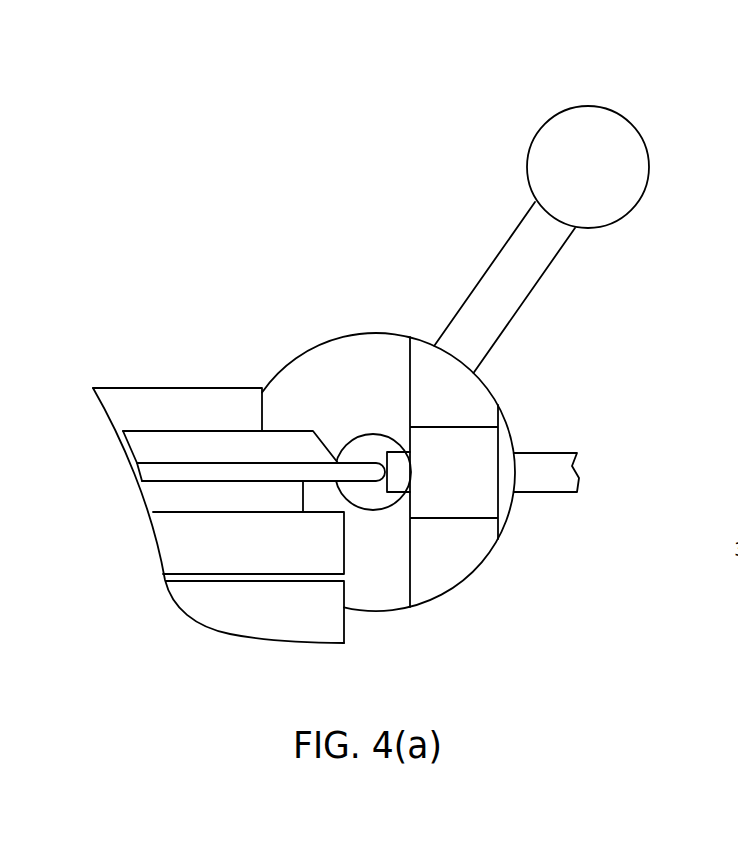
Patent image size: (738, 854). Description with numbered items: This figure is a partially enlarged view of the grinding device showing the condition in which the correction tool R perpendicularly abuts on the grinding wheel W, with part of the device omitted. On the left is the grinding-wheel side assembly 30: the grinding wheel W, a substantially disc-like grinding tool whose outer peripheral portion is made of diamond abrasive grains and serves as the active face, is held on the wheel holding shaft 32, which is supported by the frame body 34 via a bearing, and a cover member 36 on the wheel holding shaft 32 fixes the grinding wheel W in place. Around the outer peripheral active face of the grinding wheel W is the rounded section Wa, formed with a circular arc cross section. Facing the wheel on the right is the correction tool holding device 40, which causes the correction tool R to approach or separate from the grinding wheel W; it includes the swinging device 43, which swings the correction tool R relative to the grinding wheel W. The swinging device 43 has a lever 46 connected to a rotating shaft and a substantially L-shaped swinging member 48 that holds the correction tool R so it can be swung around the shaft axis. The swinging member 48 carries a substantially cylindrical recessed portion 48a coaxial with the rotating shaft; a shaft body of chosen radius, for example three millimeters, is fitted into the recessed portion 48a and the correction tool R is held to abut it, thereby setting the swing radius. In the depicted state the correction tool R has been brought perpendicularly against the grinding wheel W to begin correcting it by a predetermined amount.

The workpiece holding unit 30 is at (196, 338).
The wheel holding shaft 32 is at (212, 545).
The frame body 34 is at (243, 603).
The cover member 36 is at (140, 417).
The grinding wheel W is at (130, 450).
The rounded section Wa is at (405, 450).
The correction tool holding device 40 is at (547, 379).
The swinging device 43 is at (504, 287).
The lever 46 is at (605, 143).
The swinging member 48 is at (458, 570).
The recessed portion 48a is at (355, 448).
The correction tool R is at (552, 468).